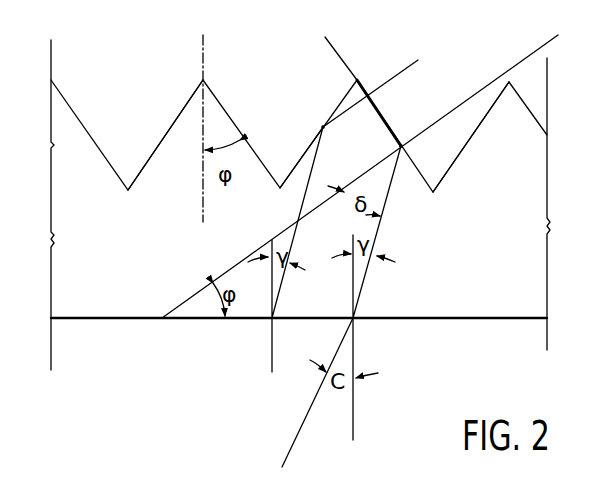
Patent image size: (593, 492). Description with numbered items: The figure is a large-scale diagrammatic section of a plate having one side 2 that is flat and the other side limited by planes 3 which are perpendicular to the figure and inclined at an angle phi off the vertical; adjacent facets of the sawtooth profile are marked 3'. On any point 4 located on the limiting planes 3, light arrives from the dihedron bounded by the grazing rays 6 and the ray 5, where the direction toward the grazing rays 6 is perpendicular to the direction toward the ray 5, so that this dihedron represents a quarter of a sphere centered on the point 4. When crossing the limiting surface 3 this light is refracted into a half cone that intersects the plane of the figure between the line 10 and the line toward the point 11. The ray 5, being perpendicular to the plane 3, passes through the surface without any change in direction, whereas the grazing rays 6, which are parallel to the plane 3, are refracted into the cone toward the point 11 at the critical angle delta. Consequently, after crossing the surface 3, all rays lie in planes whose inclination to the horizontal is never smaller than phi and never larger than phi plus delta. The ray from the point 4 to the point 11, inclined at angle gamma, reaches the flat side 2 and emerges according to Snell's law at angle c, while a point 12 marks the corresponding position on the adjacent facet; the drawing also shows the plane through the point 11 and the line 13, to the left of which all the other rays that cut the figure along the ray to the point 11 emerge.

The flat side 2 is at (519, 321).
The limiting planes 3 is at (299, 136).
The reflecting facets (opposite) 3' is at (318, 136).
The point 4 is at (406, 115).
The ray 5 is at (551, 38).
The grazing rays 6 is at (346, 27).
The half cone boundary 10 is at (270, 248).
The cone ray 11 is at (358, 315).
The point on facet 12 is at (323, 126).
The emergent plane 13 is at (305, 405).